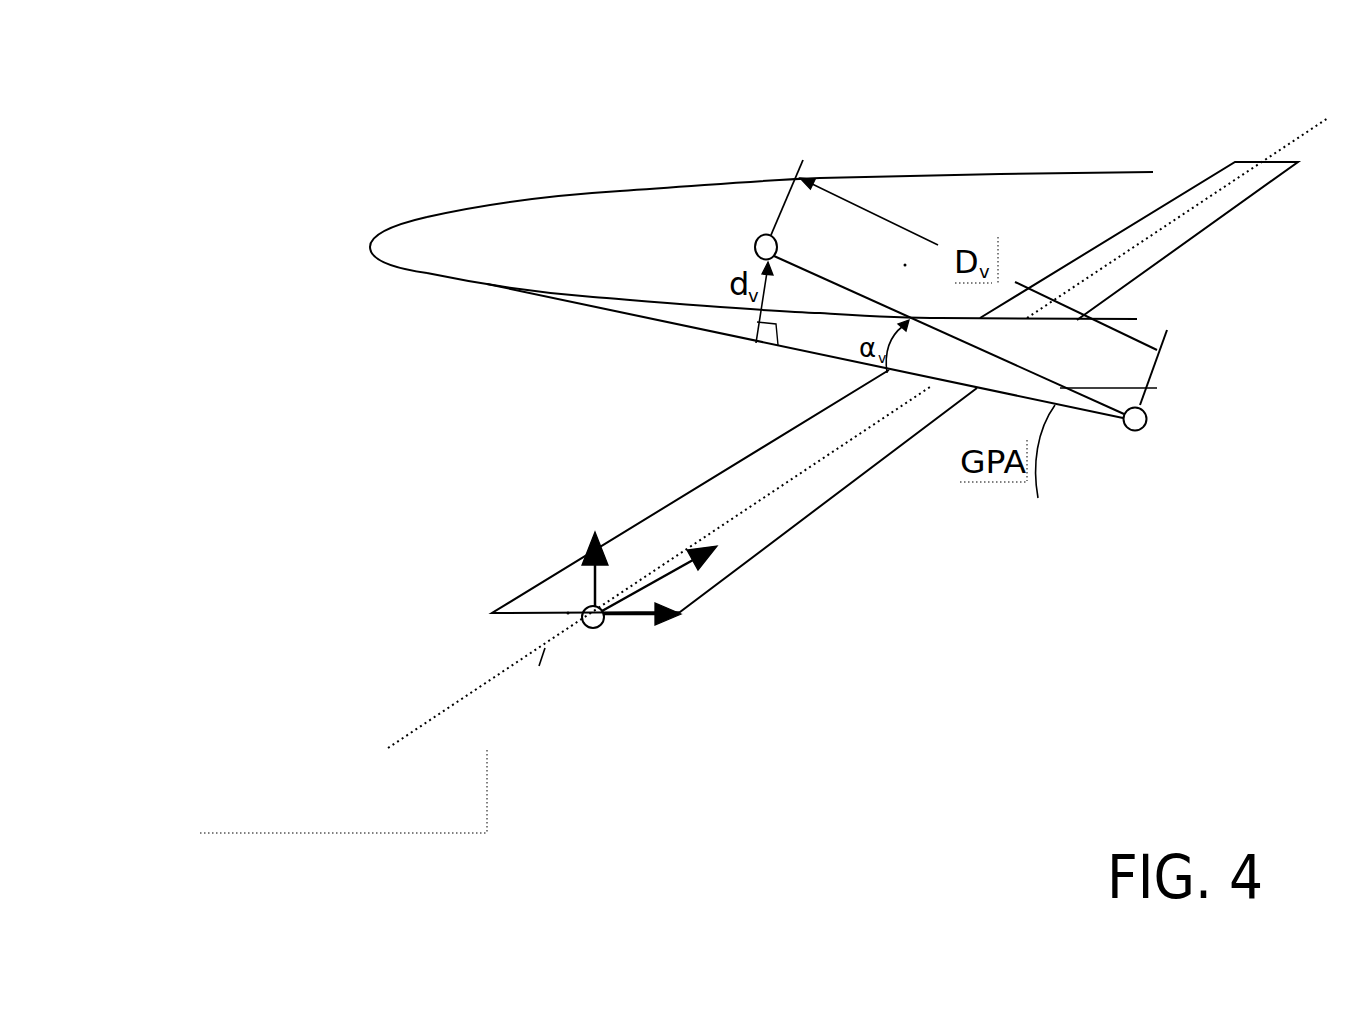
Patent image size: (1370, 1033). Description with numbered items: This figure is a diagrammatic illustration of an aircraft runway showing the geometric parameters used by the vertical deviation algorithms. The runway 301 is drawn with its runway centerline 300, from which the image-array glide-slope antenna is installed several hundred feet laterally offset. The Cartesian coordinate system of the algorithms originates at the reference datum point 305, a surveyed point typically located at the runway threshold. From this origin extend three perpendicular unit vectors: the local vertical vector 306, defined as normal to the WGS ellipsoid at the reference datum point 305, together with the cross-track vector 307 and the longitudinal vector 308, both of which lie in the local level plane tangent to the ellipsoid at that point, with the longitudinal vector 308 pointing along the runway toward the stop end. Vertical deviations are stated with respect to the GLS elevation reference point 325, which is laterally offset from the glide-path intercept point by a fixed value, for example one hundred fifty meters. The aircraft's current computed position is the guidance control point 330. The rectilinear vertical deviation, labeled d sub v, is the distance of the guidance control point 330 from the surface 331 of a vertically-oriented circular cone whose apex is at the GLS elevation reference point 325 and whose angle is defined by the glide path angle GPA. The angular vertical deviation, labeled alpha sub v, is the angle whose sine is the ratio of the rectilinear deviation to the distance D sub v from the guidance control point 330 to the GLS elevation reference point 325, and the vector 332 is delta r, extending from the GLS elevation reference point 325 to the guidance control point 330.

The runway centerline 300 is at (470, 697).
The runway 301 is at (748, 456).
The reference datum point (RDP) 305 is at (593, 632).
The local vertical vector (u_vert) 306 is at (592, 581).
The cross-track unit vector (u_lat) 307 is at (628, 621).
The longitudinal unit vector (u_rw) 308 is at (660, 580).
The GLS elevation reference point (GERP) 325 is at (1147, 423).
The guidance control point (GCP) 330 is at (760, 234).
The surface of vertically-oriented circular cone 331 is at (710, 337).
The vector Δr 332 is at (1157, 388).